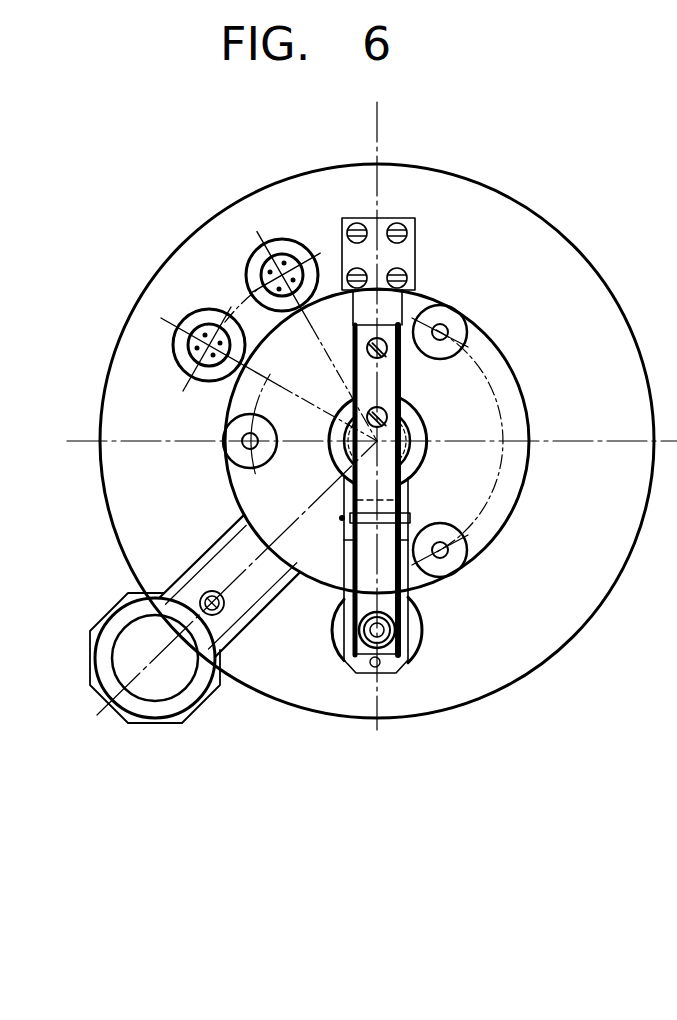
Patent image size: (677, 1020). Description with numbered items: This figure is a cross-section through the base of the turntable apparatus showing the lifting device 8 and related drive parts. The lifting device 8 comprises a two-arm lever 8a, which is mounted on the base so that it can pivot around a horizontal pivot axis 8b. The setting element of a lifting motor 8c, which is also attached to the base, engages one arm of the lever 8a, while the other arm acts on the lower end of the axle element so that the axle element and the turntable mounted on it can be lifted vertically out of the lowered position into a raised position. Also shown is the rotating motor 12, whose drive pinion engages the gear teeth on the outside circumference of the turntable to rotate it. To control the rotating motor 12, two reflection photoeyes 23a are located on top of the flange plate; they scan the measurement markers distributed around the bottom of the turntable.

The lifting device 8 is at (462, 596).
The two-arm lever 8a is at (388, 386).
The horizontal pivot axis 8b is at (412, 513).
The lifting motor 8c is at (410, 637).
The rotating motor 12 is at (176, 687).
The reflection photoeyes 23a is at (193, 333).